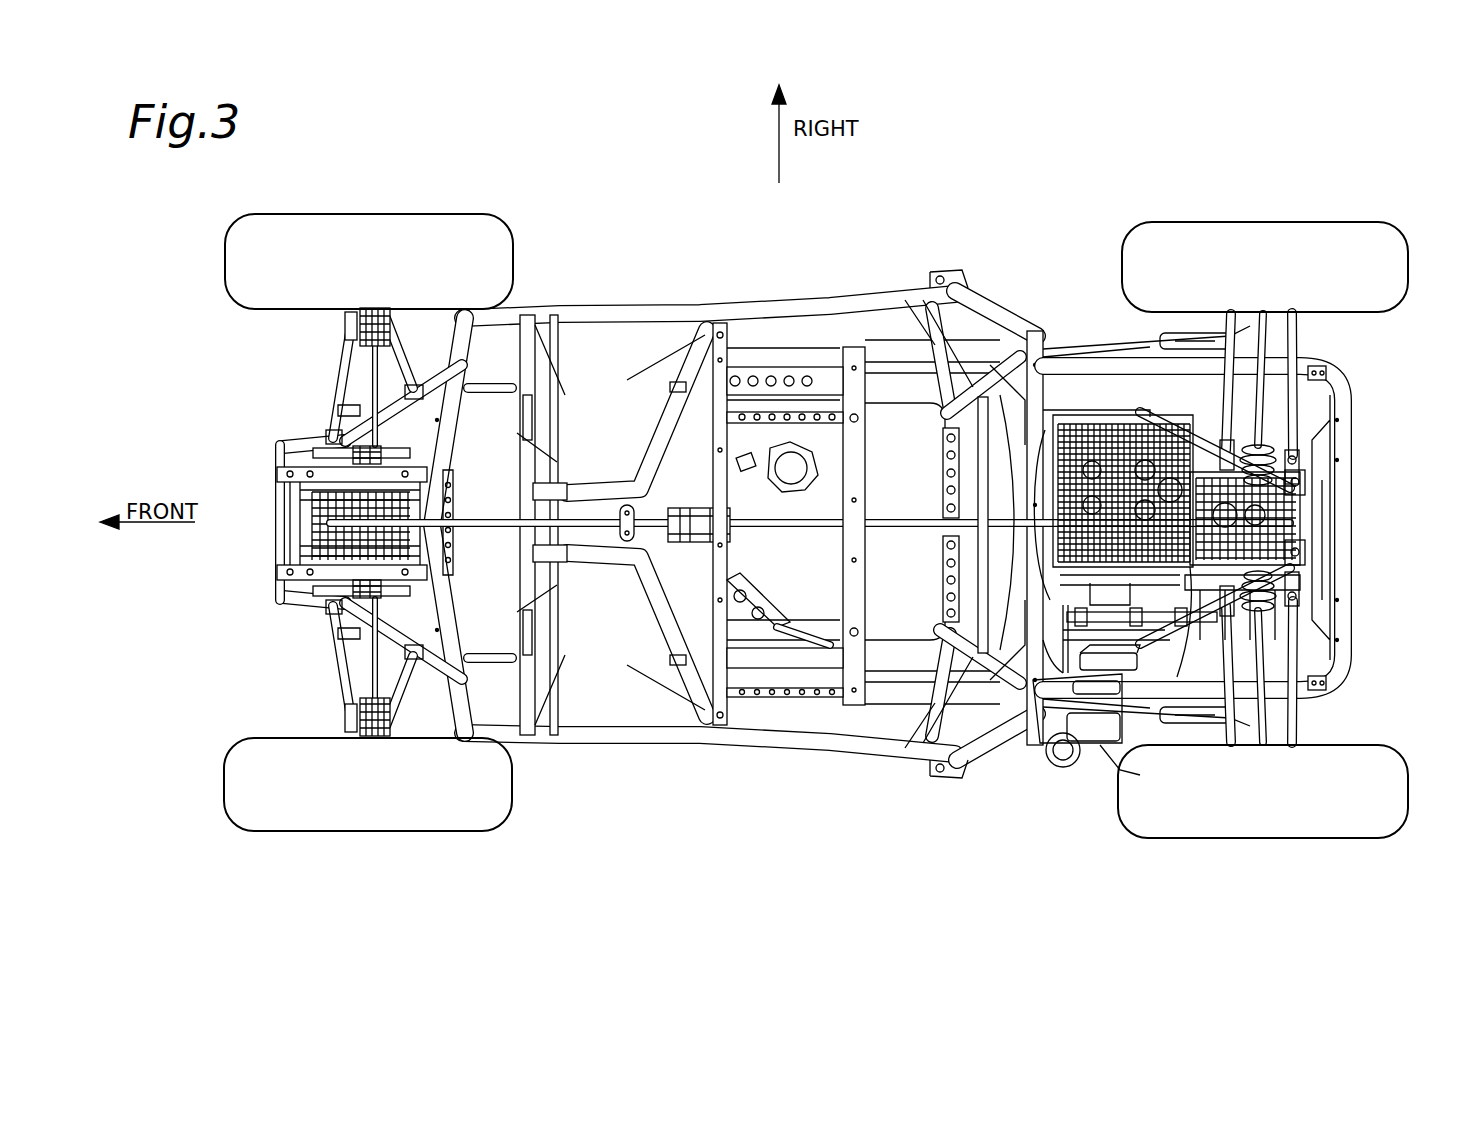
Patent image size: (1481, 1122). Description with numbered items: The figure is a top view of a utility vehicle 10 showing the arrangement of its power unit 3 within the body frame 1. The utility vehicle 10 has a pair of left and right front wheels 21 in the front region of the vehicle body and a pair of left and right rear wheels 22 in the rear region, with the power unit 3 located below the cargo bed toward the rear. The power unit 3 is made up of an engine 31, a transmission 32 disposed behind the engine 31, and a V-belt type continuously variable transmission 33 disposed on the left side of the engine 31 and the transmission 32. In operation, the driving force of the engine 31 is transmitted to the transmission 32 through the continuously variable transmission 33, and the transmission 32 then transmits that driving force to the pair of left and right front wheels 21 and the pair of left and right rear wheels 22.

The body frame 1 is at (574, 226).
The utility vehicle 10 is at (1388, 185).
The front wheels 21 is at (360, 238).
The rear wheels 22 is at (1254, 245).
The power unit 3 is at (1288, 610).
The engine 31 is at (1105, 445).
The transmission 32 is at (1290, 488).
The V-belt type continuously variable transmission 33 is at (1177, 628).